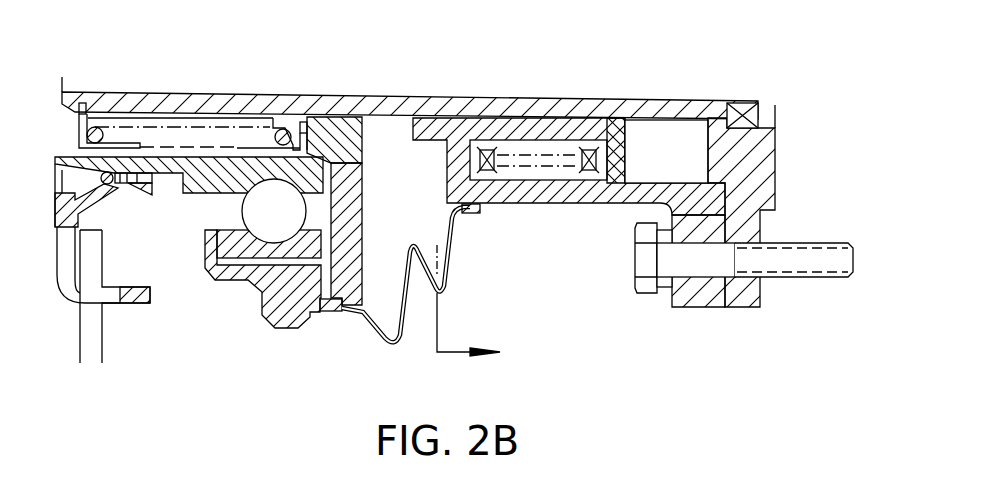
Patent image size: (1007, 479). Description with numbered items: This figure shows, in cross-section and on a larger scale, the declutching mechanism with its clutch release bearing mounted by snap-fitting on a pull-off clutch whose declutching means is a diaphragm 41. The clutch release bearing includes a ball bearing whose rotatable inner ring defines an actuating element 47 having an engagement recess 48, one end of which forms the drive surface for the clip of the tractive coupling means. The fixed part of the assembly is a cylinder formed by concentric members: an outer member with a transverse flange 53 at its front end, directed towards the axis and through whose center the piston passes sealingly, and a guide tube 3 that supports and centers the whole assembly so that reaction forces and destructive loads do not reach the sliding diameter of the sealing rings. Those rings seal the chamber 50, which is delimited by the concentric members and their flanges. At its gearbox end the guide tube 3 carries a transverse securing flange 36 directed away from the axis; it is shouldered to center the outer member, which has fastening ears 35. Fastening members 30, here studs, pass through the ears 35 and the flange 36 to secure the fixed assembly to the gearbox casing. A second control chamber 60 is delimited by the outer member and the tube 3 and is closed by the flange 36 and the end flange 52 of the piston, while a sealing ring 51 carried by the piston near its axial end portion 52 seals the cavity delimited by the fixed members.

The guide tube 3 is at (468, 300).
The fastening members 30 is at (642, 263).
The fastening ears 35 is at (700, 308).
The transverse securing flange 36 is at (765, 157).
The diaphragm 41 is at (102, 322).
The actuating element 47 is at (173, 170).
The engagement recess 48 is at (137, 193).
The chamber 50 is at (537, 150).
The sealing ring 51 is at (605, 108).
The end flange of the piston 52 is at (625, 155).
The transverse flange 53 is at (447, 185).
The second control chamber 60 is at (687, 130).